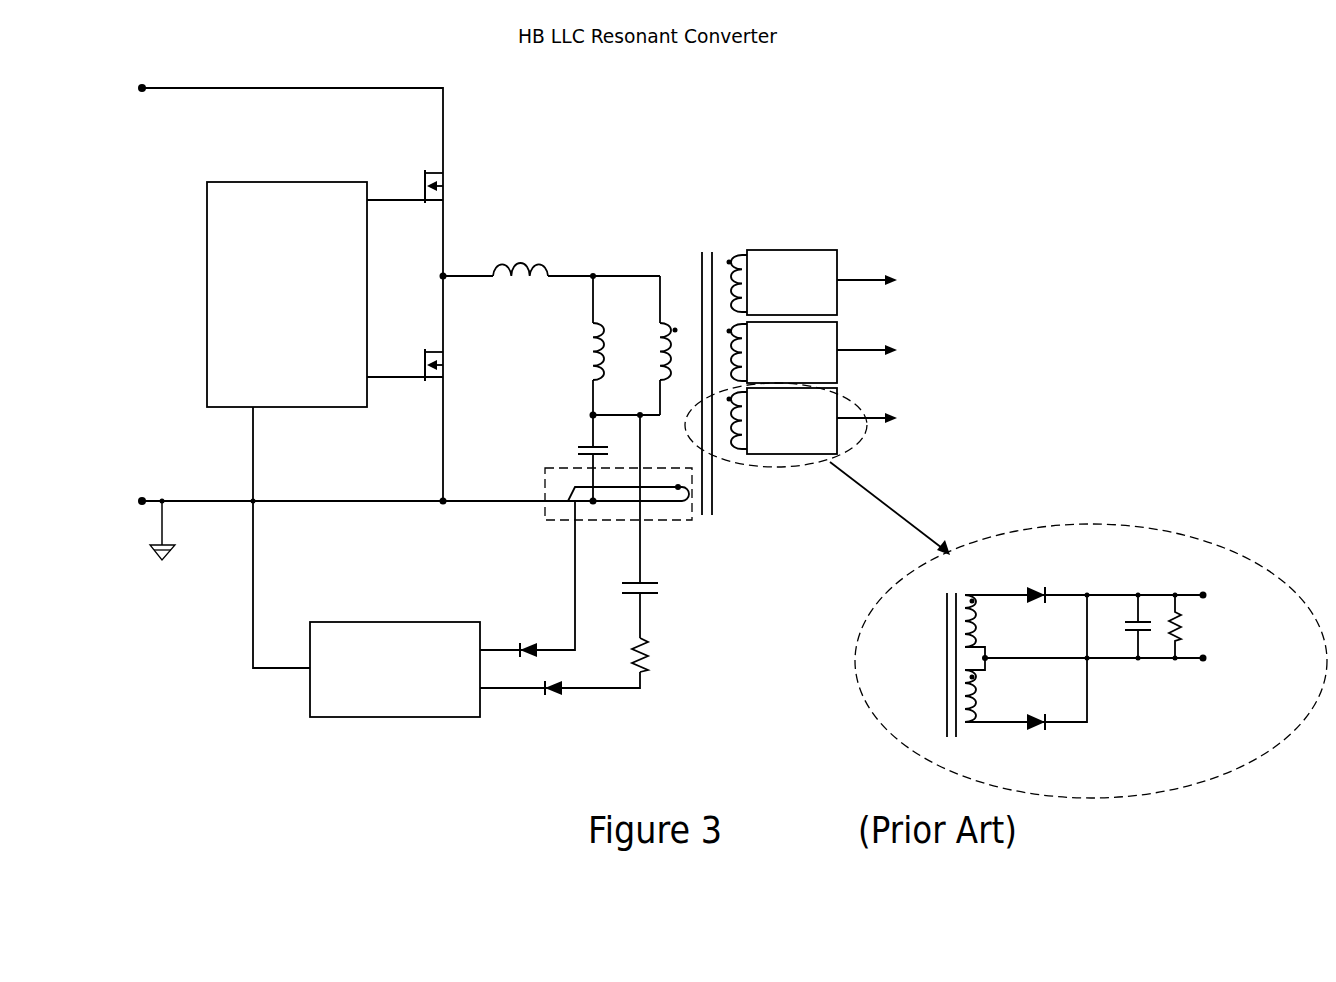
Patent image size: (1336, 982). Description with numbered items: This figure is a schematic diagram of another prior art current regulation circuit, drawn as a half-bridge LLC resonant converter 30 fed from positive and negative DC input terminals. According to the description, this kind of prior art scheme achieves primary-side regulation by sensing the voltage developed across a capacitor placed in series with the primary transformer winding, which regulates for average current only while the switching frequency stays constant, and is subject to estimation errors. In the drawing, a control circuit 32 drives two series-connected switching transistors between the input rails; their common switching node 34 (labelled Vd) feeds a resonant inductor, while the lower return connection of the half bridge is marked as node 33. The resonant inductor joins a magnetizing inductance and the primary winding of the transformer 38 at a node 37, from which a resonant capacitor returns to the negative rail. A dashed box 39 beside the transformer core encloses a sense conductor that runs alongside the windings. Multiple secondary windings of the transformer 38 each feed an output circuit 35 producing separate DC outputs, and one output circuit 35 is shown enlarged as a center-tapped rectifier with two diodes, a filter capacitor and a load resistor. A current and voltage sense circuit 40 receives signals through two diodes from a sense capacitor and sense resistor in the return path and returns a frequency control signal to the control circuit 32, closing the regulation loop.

The HB LLC resonant converter 30 is at (699, 421).
The control circuit 32 is at (287, 425).
The lower node of half bridge 33 is at (445, 504).
The switching node Vd 34 is at (447, 283).
The output circuit 35 is at (797, 250).
The resonant tank node 37 is at (590, 414).
The transformer 38 is at (750, 236).
The current sense winding 39 is at (690, 521).
The current and voltage sense circuit 40 is at (412, 720).